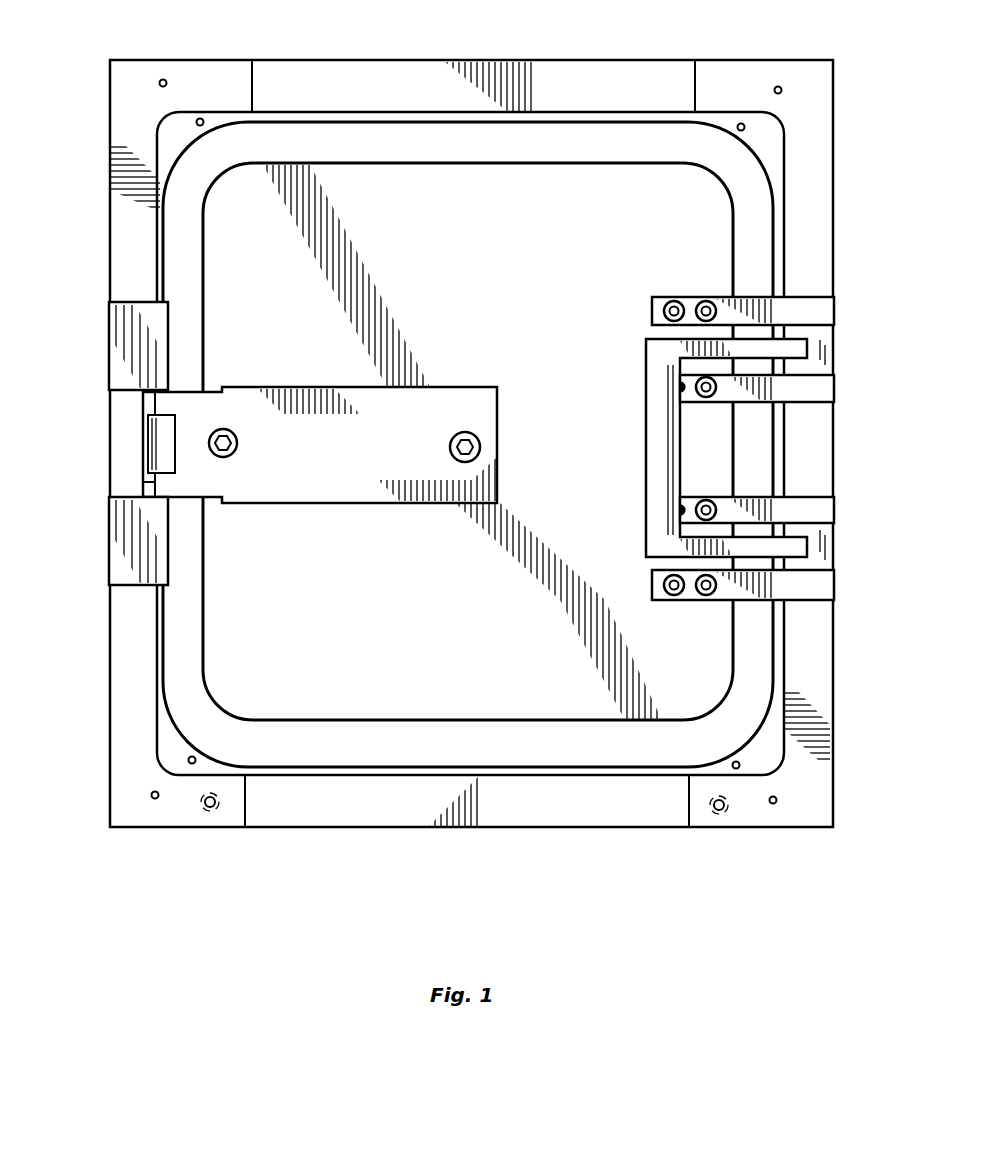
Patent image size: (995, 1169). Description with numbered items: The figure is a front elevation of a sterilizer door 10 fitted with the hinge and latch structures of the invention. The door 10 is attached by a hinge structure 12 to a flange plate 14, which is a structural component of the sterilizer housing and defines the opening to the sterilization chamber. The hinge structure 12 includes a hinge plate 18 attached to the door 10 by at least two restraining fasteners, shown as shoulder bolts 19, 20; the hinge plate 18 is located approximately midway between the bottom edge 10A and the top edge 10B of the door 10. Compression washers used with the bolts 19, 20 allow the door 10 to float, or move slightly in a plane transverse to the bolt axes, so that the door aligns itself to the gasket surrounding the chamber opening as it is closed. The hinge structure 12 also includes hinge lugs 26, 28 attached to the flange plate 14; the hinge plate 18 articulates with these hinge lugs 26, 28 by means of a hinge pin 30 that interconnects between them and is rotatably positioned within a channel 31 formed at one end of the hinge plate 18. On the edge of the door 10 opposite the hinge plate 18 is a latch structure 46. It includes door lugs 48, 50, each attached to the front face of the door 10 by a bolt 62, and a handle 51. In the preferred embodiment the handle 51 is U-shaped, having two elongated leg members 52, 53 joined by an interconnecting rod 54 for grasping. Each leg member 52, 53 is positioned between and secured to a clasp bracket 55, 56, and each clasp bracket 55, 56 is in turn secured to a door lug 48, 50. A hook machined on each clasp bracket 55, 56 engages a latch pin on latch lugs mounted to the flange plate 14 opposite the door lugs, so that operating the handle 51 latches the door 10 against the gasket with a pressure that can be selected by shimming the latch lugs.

The door 10 is at (540, 695).
The bottom edge 10A is at (320, 773).
The top edge 10B is at (345, 120).
The hinge structure 12 is at (303, 427).
The flange plate 14 is at (400, 827).
The hinge plate 18 is at (437, 410).
The shoulder bolt 19 is at (237, 447).
The shoulder bolt 20 is at (478, 450).
The hinge lug 26 is at (125, 548).
The hinge lug 28 is at (125, 355).
The hinge pin 30 is at (148, 450).
The channel 31 is at (148, 400).
The latch structure 46 is at (714, 443).
The door lug 48 is at (717, 298).
The door lug 50 is at (727, 590).
The handle 51 is at (653, 468).
The leg member 52 is at (777, 348).
The leg member 53 is at (770, 547).
The interconnecting rod 54 is at (722, 448).
The clasp bracket 55 is at (820, 343).
The clasp bracket 56 is at (840, 553).
The bolt 62 is at (670, 298).